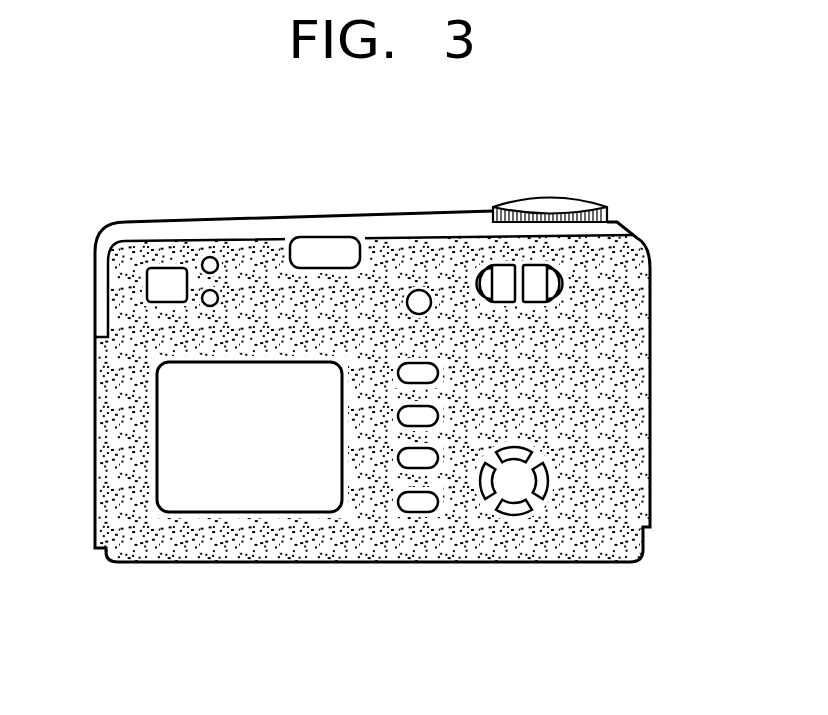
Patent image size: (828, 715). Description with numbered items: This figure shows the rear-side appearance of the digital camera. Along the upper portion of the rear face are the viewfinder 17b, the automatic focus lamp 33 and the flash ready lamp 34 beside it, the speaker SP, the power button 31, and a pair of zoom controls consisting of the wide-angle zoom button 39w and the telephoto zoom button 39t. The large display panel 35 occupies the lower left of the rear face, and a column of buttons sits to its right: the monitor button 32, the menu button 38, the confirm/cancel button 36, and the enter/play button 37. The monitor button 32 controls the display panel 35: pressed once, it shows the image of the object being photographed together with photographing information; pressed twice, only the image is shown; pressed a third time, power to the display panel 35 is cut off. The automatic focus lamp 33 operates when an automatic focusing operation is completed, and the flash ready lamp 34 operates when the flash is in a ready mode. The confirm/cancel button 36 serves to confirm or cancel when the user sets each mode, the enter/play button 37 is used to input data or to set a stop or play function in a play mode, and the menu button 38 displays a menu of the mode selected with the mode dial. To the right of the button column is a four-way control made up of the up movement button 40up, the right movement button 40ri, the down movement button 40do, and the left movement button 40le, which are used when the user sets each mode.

The viewfinder 17b is at (165, 277).
The automatic focus lamp 33 is at (210, 258).
The flash ready lamp 34 is at (206, 302).
The speaker SP is at (324, 246).
The power button 31 is at (421, 300).
The wide-angle zoom button 39w is at (493, 278).
The telephoto zoom button 39t is at (543, 278).
The display panel 35 is at (253, 493).
The monitor button 32 is at (437, 373).
The menu button 38 is at (437, 416).
The confirm/cancel button 36 is at (403, 463).
The enter/play button 37 is at (418, 508).
The up movement button 40up is at (520, 450).
The right movement button 40ri is at (548, 478).
The down movement button 40do is at (516, 512).
The left movement button 40le is at (482, 492).